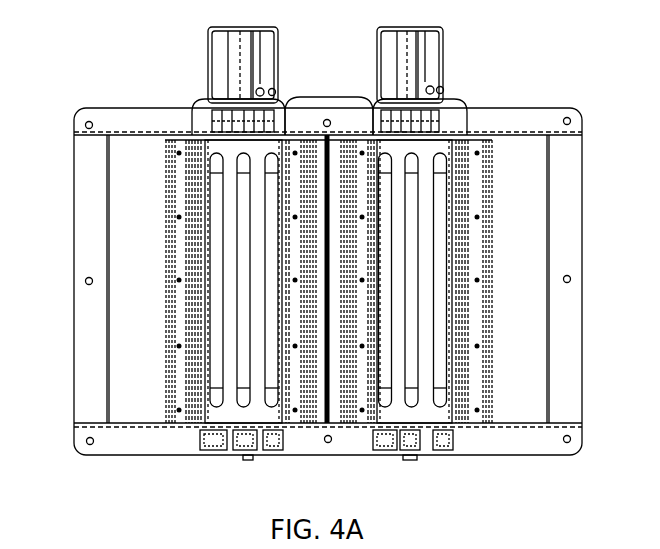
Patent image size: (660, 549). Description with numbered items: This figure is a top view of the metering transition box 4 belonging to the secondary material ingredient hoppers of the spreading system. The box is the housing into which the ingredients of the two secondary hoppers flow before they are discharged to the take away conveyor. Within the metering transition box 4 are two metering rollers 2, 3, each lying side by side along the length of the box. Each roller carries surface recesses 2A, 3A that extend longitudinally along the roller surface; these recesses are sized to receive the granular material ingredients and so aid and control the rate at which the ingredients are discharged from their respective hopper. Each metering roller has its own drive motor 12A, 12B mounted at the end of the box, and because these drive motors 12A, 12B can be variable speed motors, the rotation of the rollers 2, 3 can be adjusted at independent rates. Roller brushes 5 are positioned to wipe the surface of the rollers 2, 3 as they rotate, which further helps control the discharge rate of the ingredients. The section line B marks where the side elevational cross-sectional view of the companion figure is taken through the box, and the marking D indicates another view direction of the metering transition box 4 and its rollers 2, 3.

The metering roller 2 is at (430, 407).
The surface recesses 2A is at (443, 360).
The metering roller 3 is at (230, 410).
The surface recesses 3A is at (245, 395).
The metering transition box 4 is at (571, 175).
The roller brushes 5 is at (193, 105).
The drive motor 12A is at (448, 60).
The drive motor 12B is at (279, 69).
The section B- B is at (611, 280).
The view direction D is at (143, 277).